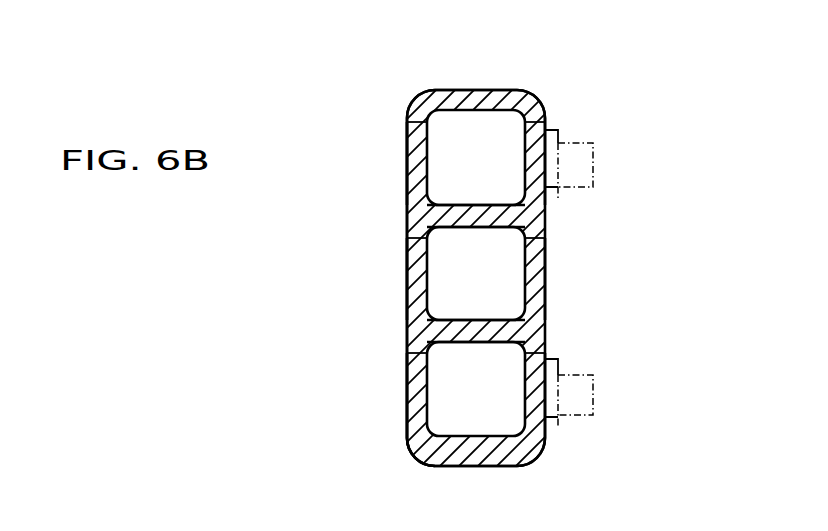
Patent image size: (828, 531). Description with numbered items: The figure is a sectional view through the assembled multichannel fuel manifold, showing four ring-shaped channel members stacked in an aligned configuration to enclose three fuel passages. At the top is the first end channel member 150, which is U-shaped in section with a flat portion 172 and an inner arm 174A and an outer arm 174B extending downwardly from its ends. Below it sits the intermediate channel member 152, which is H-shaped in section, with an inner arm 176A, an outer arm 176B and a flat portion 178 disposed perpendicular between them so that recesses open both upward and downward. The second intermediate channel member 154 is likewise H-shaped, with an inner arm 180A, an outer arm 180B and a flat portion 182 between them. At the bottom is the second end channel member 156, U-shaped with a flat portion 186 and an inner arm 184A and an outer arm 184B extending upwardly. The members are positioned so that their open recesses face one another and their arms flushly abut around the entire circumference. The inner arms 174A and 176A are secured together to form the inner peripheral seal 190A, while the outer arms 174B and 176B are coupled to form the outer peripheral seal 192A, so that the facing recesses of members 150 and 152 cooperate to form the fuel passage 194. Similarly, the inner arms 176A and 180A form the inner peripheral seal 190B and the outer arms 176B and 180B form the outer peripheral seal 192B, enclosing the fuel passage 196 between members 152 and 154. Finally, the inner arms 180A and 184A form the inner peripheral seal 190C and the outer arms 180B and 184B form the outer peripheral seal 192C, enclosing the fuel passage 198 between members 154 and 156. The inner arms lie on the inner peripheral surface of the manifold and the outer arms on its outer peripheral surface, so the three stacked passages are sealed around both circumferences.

The first end channel member 150 is at (541, 93).
The intermediate channel member 152 is at (400, 210).
The intermediate channel member 154 is at (400, 329).
The second end channel member 156 is at (406, 467).
The flat portion 172 is at (446, 91).
The inner arm 174A is at (416, 108).
The outer arm 174B is at (534, 113).
The inner arm 176A is at (407, 162).
The outer arm 176B is at (540, 158).
The flat portion 178 is at (452, 213).
The inner arm 180A is at (407, 278).
The outer arm 180B is at (525, 282).
The flat portion 182 is at (497, 331).
The inner arm 184A is at (407, 392).
The outer arm 184B is at (545, 410).
The flat portion 186 is at (477, 464).
The inner peripheral seal 190A is at (407, 118).
The inner peripheral seal 190B is at (407, 237).
The inner peripheral seal 190C is at (407, 353).
The outer peripheral seal 192A is at (538, 126).
The outer peripheral seal 192B is at (545, 240).
The outer peripheral seal 192C is at (545, 352).
The fuel passage 194 is at (492, 141).
The fuel passage 196 is at (486, 296).
The fuel passage 198 is at (456, 413).